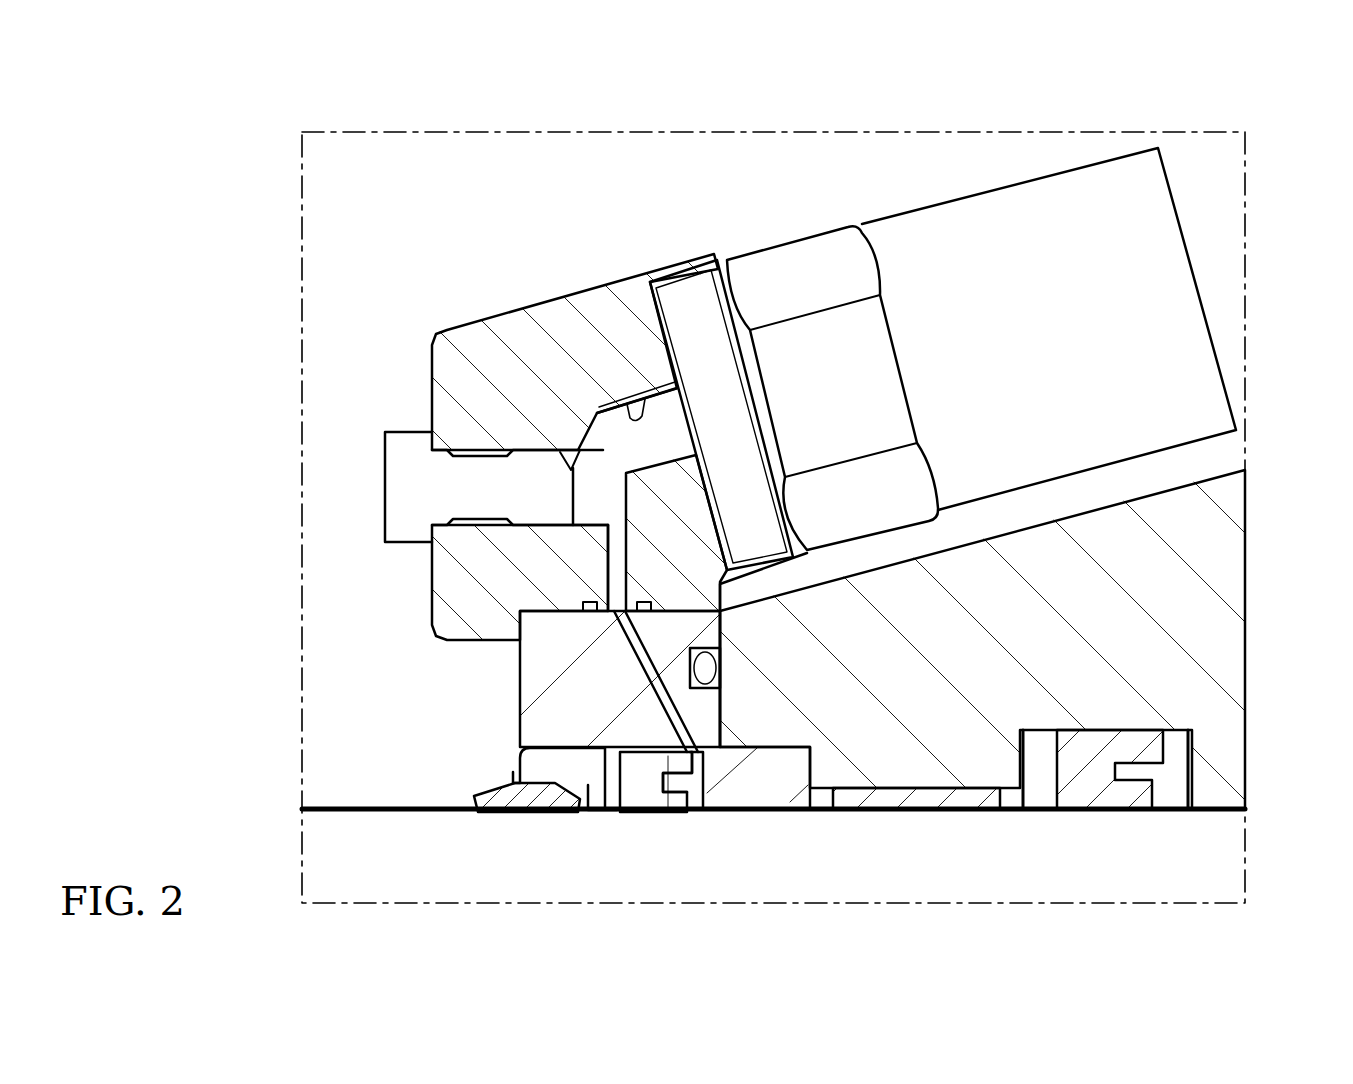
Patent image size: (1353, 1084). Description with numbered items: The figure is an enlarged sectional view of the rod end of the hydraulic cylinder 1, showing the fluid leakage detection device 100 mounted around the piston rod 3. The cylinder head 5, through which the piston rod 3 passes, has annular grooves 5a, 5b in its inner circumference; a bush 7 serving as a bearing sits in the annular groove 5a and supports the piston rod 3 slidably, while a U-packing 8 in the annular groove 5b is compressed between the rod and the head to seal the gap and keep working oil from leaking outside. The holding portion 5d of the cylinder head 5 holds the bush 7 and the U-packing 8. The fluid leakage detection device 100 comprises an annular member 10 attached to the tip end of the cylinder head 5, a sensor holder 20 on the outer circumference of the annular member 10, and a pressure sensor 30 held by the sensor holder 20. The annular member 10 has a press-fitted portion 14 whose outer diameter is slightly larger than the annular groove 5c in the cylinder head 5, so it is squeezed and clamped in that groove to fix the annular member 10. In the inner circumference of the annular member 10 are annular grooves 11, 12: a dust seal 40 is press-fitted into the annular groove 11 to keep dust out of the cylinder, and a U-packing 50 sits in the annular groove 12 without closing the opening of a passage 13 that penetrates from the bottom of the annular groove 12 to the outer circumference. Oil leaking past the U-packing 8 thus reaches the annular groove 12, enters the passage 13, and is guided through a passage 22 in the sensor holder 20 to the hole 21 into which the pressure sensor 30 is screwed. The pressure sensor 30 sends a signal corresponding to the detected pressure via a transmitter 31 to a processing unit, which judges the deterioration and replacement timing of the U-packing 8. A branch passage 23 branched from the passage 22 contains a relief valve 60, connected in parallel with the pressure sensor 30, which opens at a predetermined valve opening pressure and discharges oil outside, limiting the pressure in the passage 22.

The hydraulic cylinder 1 is at (360, 188).
The fluid leakage detection device 100 is at (478, 255).
The piston rod 3 is at (1222, 862).
The cylinder head 5 is at (1212, 478).
The annular groove 5a is at (916, 870).
The annular groove 5b is at (1130, 841).
The annular groove 5c is at (776, 748).
The holding portion 5d is at (1220, 625).
The bush 7 is at (930, 800).
The U-packing 8 is at (1100, 800).
The annular member 10 is at (516, 698).
The annular groove 11 is at (566, 750).
The annular groove 12 is at (667, 800).
The passage 13 is at (650, 680).
The press-fitted portion 14 is at (745, 800).
The sensor holder 20 is at (428, 373).
The hole 21 is at (630, 398).
The passage 22 is at (613, 549).
The branch passage 23 is at (566, 463).
The pressure sensor 30 is at (764, 242).
The transmitter 31 is at (1080, 200).
The dust seal 40 is at (530, 800).
The U-packing 50 is at (640, 798).
The relief valve 60 is at (470, 487).